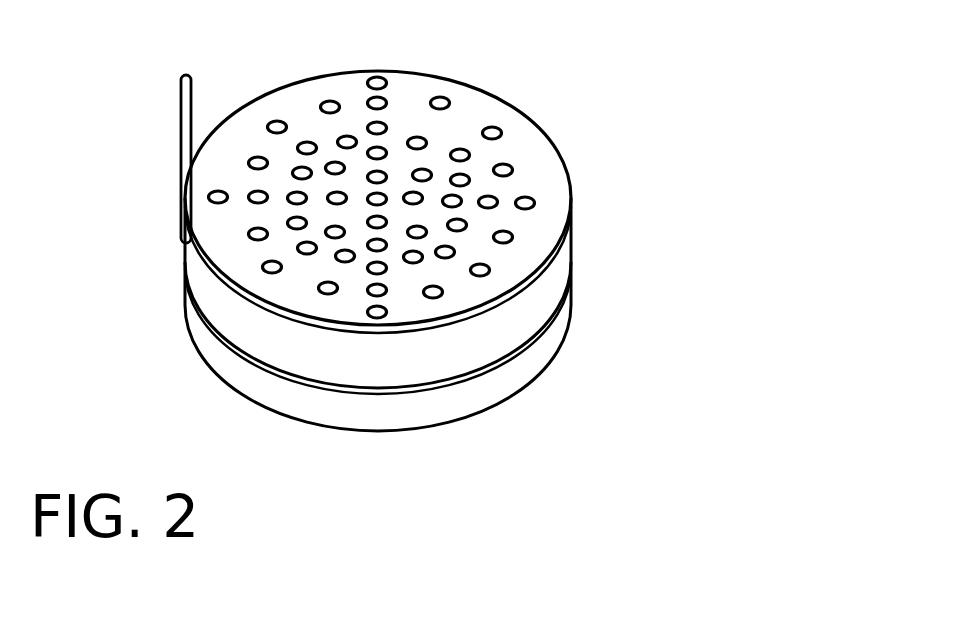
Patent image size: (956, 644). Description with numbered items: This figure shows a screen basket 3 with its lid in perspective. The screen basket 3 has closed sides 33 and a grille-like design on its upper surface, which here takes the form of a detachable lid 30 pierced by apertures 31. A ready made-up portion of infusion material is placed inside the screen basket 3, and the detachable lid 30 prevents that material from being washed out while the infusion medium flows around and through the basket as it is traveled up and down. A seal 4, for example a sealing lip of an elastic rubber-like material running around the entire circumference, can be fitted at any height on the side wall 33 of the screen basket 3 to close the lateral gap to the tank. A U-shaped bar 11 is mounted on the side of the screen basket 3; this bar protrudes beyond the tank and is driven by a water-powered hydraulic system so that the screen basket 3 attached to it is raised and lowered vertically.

The screen basket 3 is at (598, 203).
The seal 4 is at (573, 275).
The U-shaped bar 11 is at (185, 103).
The detachable lid 30 is at (530, 148).
The apertures 31 is at (441, 99).
The closed sides 33 is at (572, 258).